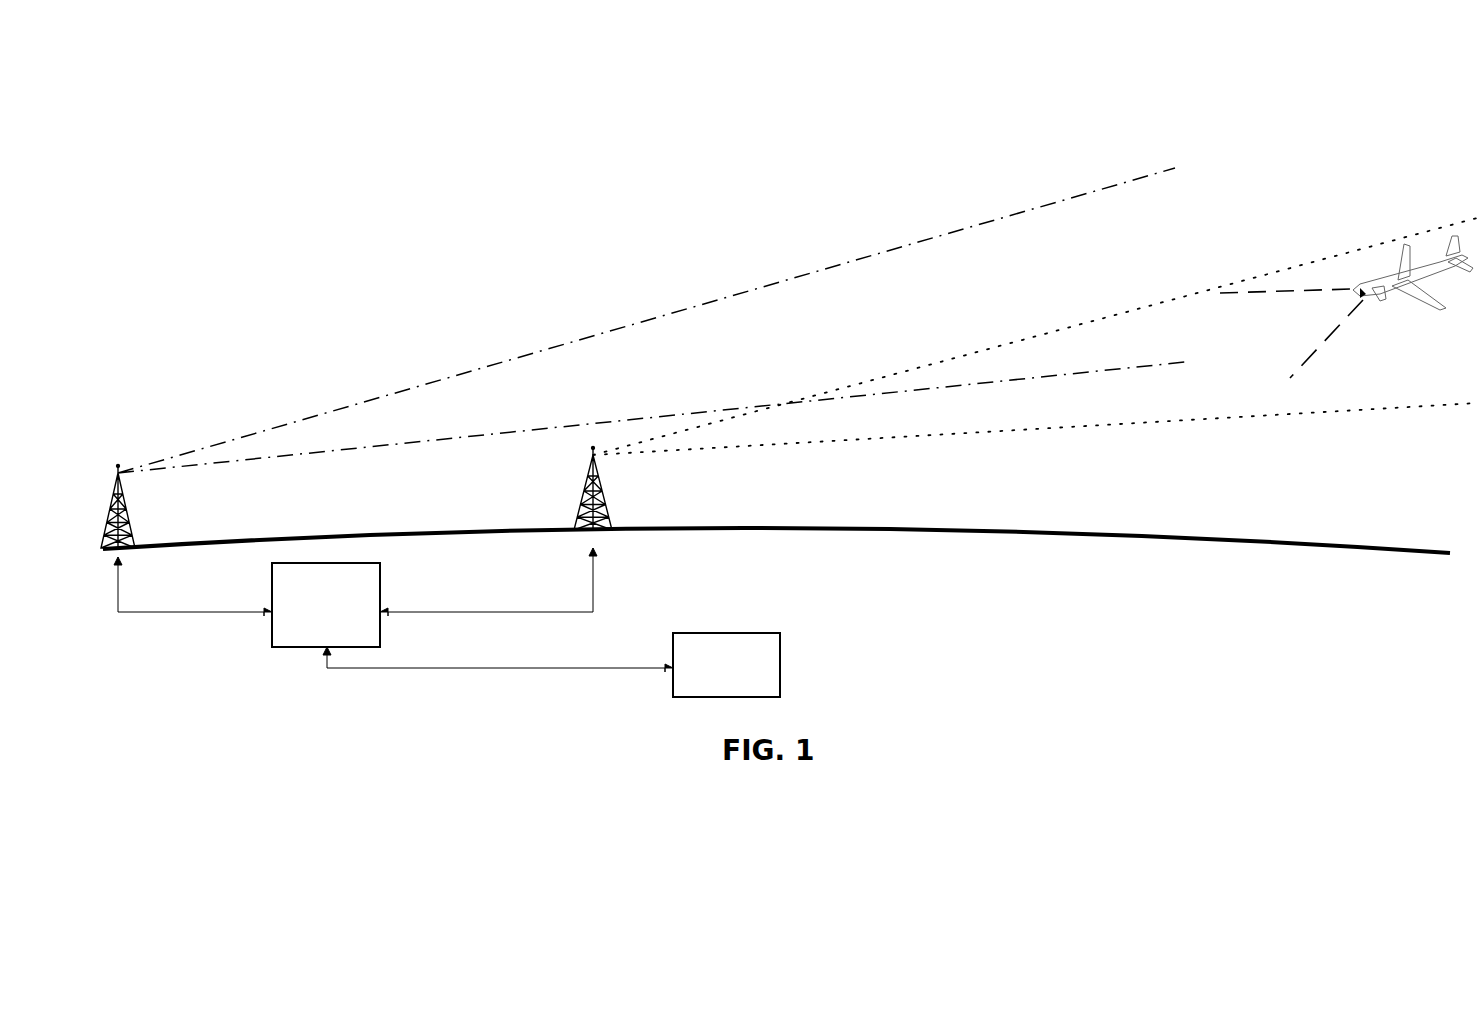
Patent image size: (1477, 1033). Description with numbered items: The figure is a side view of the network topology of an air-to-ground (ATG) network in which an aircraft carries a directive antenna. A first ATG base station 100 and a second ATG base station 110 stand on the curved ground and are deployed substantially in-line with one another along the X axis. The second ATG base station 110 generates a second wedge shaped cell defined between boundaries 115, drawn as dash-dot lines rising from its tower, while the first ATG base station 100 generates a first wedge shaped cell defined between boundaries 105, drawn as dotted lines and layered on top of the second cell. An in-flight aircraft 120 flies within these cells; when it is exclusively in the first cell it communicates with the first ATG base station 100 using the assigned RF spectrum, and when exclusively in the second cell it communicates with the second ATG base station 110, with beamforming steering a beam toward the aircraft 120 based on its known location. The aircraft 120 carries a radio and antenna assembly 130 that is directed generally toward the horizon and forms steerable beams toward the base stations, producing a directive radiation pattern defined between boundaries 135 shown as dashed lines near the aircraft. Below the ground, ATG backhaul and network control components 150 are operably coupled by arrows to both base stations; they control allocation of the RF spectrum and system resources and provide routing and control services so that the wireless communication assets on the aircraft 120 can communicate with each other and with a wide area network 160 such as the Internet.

The first ATG base station 100 is at (578, 517).
The boundaries of first wedge shaped cell 105 is at (935, 365).
The second ATG base station 110 is at (136, 521).
The boundaries of second wedge shaped cell 115 is at (333, 410).
The aircraft 120 is at (1390, 282).
The radio and antenna assembly 130 is at (1360, 293).
The boundaries of directive radiation pattern 135 is at (1255, 292).
The ATG backhaul and network control components 150 is at (272, 640).
The wide area network (WAN) 160 is at (723, 633).